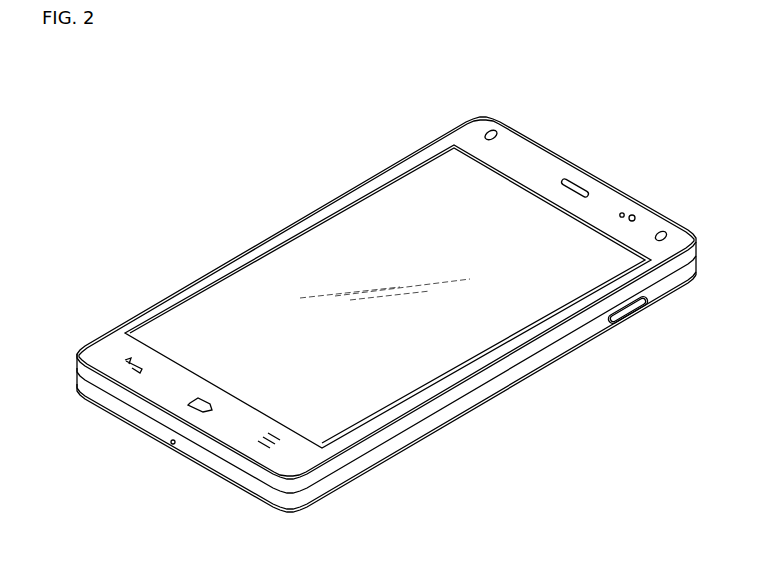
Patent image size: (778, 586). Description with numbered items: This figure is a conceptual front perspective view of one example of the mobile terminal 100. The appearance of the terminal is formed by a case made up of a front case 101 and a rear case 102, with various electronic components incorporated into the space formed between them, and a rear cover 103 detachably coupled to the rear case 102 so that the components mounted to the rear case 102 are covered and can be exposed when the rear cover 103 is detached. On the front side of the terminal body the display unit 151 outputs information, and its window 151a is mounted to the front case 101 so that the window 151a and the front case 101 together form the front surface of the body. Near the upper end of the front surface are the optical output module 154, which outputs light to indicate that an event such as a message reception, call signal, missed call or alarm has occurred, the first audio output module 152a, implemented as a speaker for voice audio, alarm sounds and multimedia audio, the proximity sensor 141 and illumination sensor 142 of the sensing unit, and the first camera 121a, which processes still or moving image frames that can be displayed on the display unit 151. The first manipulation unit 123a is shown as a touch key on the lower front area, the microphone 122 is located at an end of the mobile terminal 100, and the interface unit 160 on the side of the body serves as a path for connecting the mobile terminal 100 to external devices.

The mobile terminal 100 is at (276, 171).
The front case 101 is at (700, 255).
The rear case 102 is at (693, 272).
The rear cover 103 is at (687, 288).
The display unit 151 is at (260, 283).
The window 151a is at (415, 200).
The optical output module 154 is at (503, 133).
The first audio output module 152a is at (573, 183).
The illumination sensor 142 is at (622, 212).
The proximity sensor 141 is at (634, 216).
The first camera 121a is at (666, 233).
The interface unit 160 is at (626, 311).
The microphone 122 is at (171, 444).
The first manipulation unit 123a is at (257, 447).